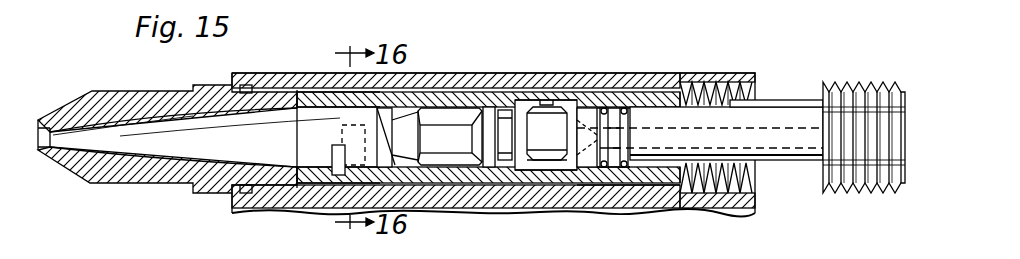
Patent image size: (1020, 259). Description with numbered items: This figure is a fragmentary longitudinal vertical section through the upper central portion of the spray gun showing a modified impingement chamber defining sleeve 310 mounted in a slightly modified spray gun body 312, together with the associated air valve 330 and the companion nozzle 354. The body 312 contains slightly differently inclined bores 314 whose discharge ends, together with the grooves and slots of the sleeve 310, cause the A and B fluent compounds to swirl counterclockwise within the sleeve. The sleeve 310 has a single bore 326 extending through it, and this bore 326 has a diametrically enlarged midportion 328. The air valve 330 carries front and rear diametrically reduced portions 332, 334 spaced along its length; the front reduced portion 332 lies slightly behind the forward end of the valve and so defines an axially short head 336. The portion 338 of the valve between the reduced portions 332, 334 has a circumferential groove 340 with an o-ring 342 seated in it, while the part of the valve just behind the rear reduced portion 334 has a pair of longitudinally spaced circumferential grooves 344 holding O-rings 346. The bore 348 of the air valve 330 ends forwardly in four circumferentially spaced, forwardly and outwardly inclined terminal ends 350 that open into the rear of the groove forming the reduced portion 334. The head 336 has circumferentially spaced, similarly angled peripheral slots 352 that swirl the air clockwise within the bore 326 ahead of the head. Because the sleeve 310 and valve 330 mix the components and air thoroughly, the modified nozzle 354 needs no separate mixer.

The impingement chamber defining sleeve 310 is at (408, 95).
The spray gun body 312 is at (662, 80).
The inclined bores 314 is at (443, 207).
The bore 326 is at (648, 117).
The diametrically enlarged midportion 328 is at (552, 105).
The air valve 330 is at (777, 160).
The front diametrically reduced portion 332 is at (437, 128).
The rear diametrically reduced portion 334 is at (543, 143).
The head 336 is at (330, 78).
The portion of the air valve 338 is at (522, 160).
The circumferential groove 340 is at (472, 137).
The o-ring 342 is at (513, 127).
The circumferential grooves 344 is at (612, 152).
The O-rings 346 is at (615, 110).
The bore of the air valve 348 is at (768, 133).
The terminal ends 350 is at (585, 196).
The peripheral slots 352 is at (312, 127).
The nozzle 354 is at (172, 177).